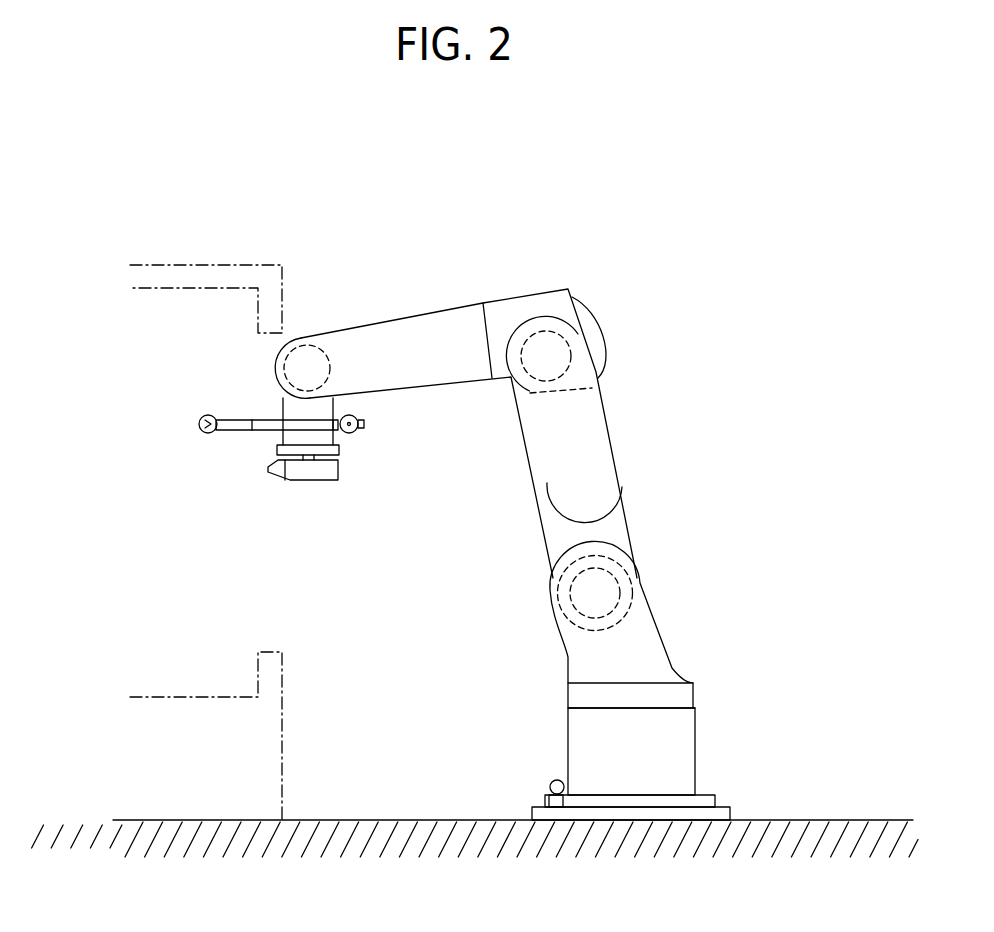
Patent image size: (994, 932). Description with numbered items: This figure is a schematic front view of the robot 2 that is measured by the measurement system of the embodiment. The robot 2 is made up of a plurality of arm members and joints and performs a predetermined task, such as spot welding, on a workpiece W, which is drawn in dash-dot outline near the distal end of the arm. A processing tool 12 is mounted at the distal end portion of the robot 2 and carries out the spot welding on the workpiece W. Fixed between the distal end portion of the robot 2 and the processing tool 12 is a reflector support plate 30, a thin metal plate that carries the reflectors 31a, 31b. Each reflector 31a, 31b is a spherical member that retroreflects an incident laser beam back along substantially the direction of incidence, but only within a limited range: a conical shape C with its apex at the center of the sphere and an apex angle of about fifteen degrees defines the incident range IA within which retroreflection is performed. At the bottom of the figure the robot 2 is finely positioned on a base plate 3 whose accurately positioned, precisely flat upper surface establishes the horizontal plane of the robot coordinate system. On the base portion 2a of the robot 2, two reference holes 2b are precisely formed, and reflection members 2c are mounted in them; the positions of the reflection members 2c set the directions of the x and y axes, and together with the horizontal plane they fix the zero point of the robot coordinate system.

The robot 2 is at (634, 435).
The base portion 2a is at (697, 740).
The reference hole 2b is at (556, 794).
The reflection member 2c is at (552, 781).
The base plate 3 is at (731, 813).
The processing tool 12 is at (312, 481).
The reflector support plate 30 is at (235, 431).
The reflector 31a is at (208, 415).
The reflector 31b is at (358, 419).
The workpiece W is at (182, 264).
The conical shape C is at (207, 434).
The incident range IA is at (199, 426).